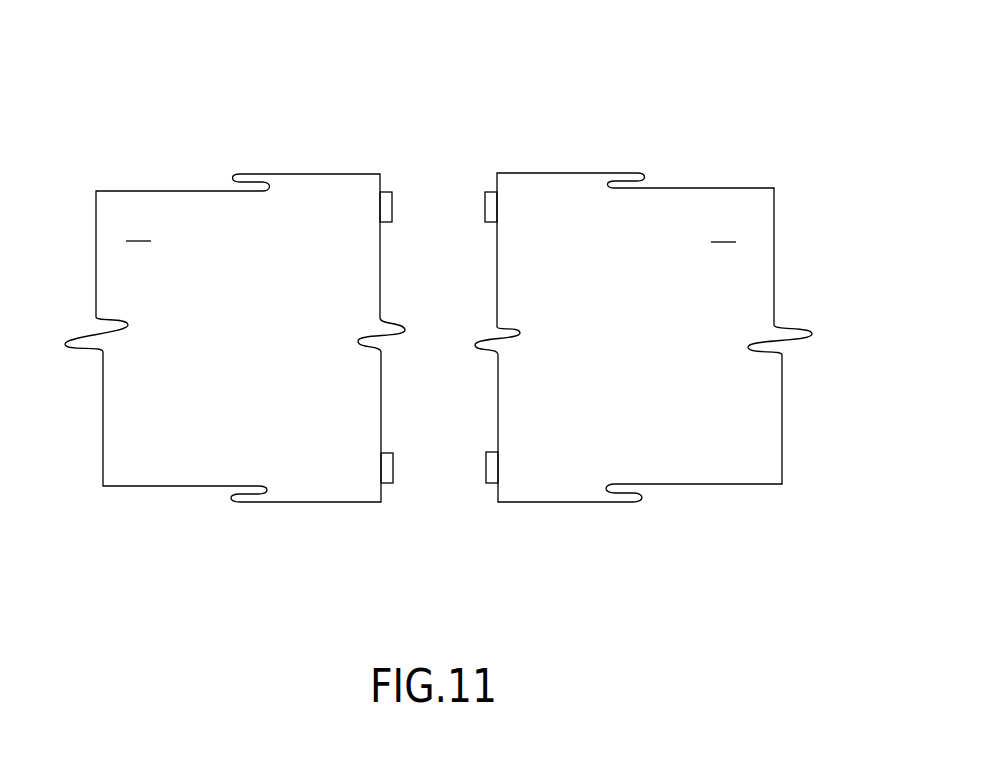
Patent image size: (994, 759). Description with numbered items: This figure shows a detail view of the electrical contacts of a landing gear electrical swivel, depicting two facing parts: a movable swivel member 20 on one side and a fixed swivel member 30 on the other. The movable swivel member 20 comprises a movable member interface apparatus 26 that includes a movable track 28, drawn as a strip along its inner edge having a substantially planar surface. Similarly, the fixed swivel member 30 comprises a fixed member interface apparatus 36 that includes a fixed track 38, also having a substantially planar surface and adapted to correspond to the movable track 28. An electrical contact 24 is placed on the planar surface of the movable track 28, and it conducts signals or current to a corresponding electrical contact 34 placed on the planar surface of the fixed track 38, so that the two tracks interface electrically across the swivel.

The movable swivel member 20 is at (236, 259).
The electrical contact 24 is at (393, 200).
The movable member interface apparatus 26 is at (163, 338).
The movable track 28 is at (350, 178).
The fixed swivel member 30 is at (633, 251).
The electrical contact 34 is at (485, 200).
The fixed member interface apparatus 36 is at (713, 336).
The fixed track 38 is at (520, 178).